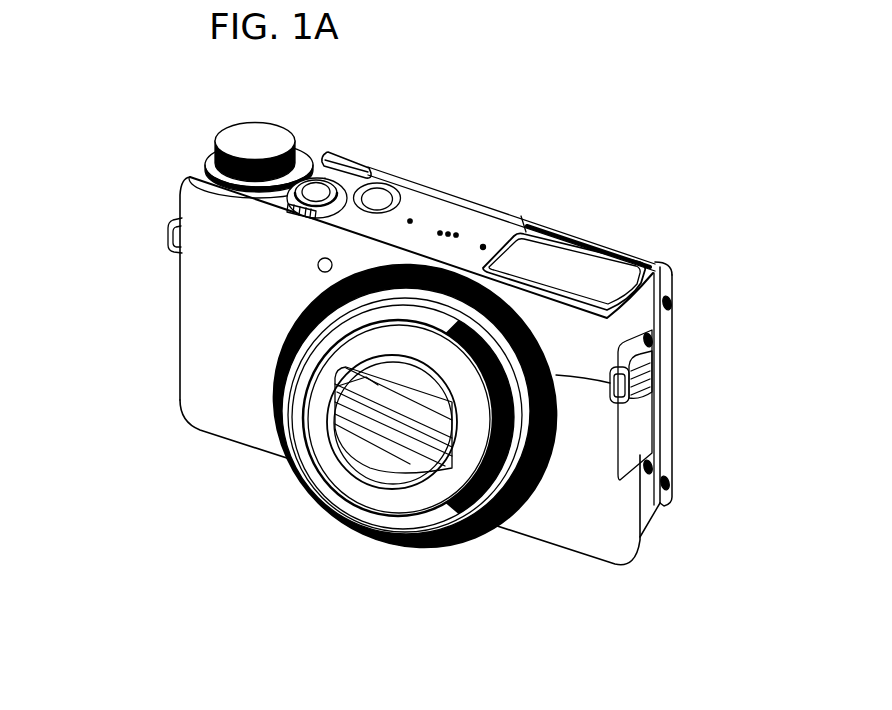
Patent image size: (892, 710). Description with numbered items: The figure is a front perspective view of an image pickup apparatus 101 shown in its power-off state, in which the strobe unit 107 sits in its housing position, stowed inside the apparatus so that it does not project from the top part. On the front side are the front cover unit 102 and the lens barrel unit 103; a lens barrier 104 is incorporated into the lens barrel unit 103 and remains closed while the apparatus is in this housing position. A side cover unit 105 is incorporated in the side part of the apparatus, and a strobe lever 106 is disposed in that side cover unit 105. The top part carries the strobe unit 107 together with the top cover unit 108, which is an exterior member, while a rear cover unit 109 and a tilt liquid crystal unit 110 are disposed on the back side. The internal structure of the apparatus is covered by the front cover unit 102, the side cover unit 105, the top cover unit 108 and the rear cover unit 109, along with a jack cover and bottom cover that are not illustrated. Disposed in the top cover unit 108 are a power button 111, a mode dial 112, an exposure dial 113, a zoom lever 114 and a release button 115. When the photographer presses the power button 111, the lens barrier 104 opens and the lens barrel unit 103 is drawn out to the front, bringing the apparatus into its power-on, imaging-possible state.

The image pickup apparatus 101 is at (698, 228).
The front cover unit 102 is at (600, 537).
The lens barrel unit 103 is at (392, 488).
The lens barrier 104 is at (377, 452).
The side cover unit 105 is at (637, 437).
The strobe lever 106 is at (652, 363).
The strobe unit 107 is at (567, 280).
The top cover unit 108 is at (397, 218).
The rear cover unit 109 is at (650, 513).
The tilt liquid crystal unit 110 is at (673, 350).
The power button 111 is at (380, 197).
The mode dial 112 is at (240, 135).
The exposure dial 113 is at (207, 158).
The zoom lever 114 is at (302, 212).
The release button 115 is at (310, 190).